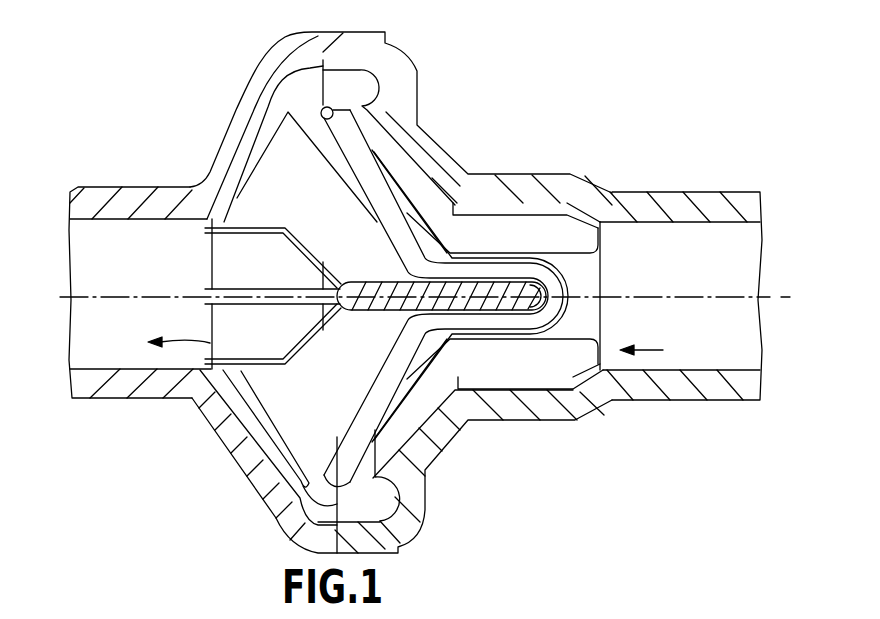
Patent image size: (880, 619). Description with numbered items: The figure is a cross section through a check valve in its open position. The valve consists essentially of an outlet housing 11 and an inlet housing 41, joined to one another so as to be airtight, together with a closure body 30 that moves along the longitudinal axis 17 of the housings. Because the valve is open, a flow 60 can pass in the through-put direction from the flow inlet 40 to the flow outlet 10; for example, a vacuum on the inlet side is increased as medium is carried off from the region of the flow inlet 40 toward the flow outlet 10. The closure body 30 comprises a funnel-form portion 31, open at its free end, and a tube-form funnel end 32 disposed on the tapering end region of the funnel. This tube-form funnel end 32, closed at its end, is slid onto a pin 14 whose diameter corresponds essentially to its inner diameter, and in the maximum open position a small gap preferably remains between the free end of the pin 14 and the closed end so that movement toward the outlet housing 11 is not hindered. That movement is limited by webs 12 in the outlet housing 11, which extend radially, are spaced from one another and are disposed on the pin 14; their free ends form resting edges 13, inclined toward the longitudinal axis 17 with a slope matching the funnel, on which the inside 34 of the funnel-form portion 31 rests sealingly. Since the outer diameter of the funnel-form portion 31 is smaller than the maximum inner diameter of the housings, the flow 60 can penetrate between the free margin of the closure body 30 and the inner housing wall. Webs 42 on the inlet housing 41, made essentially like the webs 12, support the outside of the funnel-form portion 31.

The flow outlet 10 is at (87, 324).
The outlet housing 11 is at (137, 189).
The webs 12 is at (272, 186).
The resting edges 13 is at (335, 176).
The pin 14 is at (458, 302).
The longitudinal axis 17 is at (636, 298).
The closure body 30 is at (333, 111).
The funnel-form portion 31 is at (378, 195).
The tube-form funnel end 32 is at (530, 322).
The inside of the funnel-form portion 34 is at (376, 228).
The flow inlet 40 is at (740, 326).
The inlet housing 41 is at (599, 184).
The webs 42 is at (473, 235).
The flow 60 is at (248, 455).